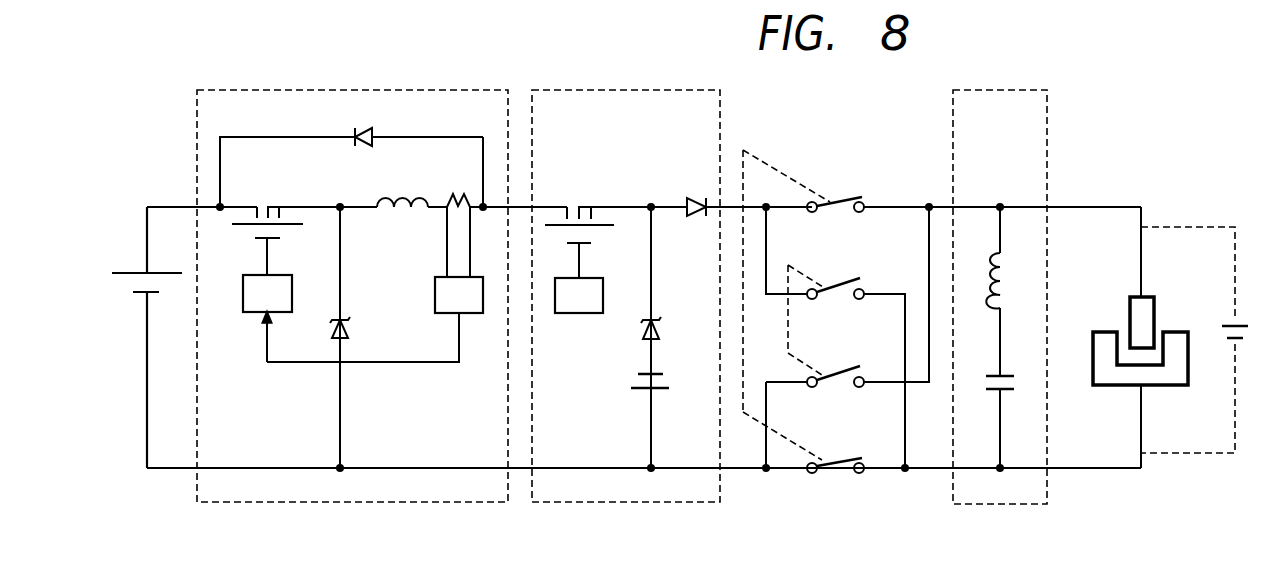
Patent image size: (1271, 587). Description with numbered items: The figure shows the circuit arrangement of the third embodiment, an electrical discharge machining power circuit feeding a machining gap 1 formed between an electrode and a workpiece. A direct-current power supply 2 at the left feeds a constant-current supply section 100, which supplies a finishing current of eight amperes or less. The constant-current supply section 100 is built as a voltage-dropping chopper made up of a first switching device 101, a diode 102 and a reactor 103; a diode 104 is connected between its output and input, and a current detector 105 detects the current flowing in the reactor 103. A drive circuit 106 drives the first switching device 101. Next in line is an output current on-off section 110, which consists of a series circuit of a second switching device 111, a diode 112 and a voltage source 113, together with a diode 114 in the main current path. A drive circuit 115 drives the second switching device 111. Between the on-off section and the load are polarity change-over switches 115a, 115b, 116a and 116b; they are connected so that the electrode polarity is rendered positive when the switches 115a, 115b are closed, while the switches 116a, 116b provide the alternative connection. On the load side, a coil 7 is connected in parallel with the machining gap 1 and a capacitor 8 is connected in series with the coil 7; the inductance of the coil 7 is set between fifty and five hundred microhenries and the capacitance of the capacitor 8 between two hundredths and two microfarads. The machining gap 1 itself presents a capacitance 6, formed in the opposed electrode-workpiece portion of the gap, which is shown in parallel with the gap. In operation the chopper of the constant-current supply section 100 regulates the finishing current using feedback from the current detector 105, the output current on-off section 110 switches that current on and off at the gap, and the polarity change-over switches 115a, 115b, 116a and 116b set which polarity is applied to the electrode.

The machining gap 1 is at (1154, 306).
The direct-current power supply 2 is at (125, 268).
The capacitance 6 is at (1244, 328).
The coil 7 is at (1012, 260).
The capacitor 8 is at (1012, 370).
The constant-current supply section 100 is at (508, 76).
The first switching device 101 is at (266, 198).
The diode 102 is at (346, 325).
The reactor 103 is at (404, 192).
The diode 104 is at (372, 136).
The current detector 105 is at (425, 292).
The drive circuit 106 is at (293, 290).
The output current on-off section 110 is at (718, 76).
The second switching device 111 is at (577, 201).
The diode 112 is at (662, 320).
The voltage source 113 is at (664, 378).
The diode 114 is at (684, 192).
The drive circuit 115 is at (600, 290).
The polarity change-over switch 115a is at (848, 194).
The polarity change-over switch 115b is at (846, 458).
The polarity change-over switch 116a is at (846, 282).
The polarity change-over switch 116b is at (846, 369).